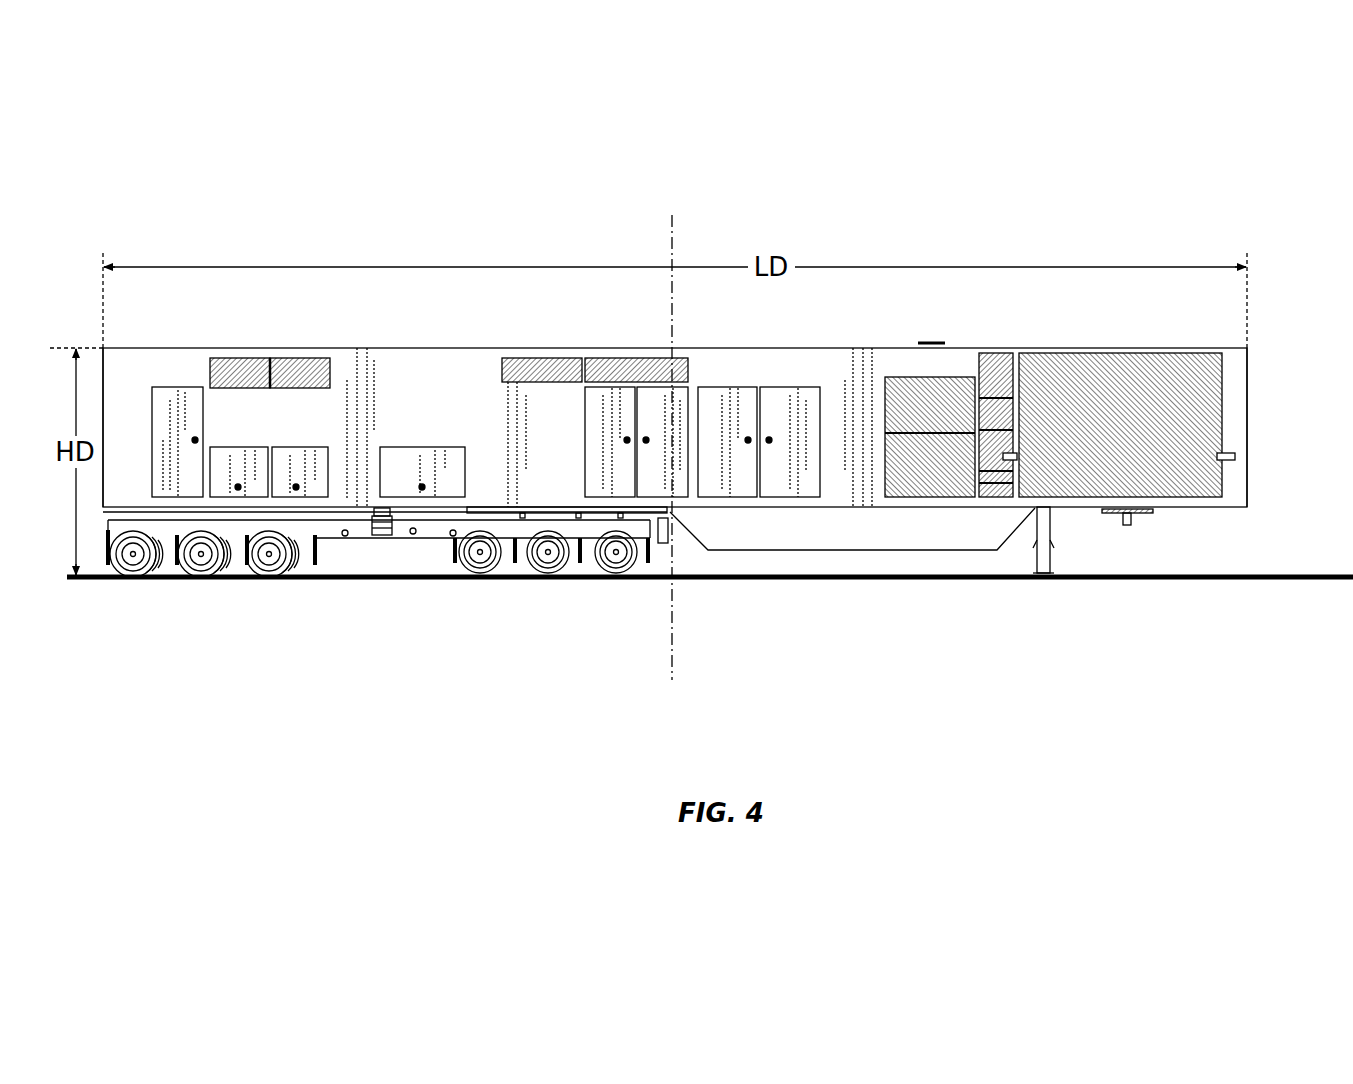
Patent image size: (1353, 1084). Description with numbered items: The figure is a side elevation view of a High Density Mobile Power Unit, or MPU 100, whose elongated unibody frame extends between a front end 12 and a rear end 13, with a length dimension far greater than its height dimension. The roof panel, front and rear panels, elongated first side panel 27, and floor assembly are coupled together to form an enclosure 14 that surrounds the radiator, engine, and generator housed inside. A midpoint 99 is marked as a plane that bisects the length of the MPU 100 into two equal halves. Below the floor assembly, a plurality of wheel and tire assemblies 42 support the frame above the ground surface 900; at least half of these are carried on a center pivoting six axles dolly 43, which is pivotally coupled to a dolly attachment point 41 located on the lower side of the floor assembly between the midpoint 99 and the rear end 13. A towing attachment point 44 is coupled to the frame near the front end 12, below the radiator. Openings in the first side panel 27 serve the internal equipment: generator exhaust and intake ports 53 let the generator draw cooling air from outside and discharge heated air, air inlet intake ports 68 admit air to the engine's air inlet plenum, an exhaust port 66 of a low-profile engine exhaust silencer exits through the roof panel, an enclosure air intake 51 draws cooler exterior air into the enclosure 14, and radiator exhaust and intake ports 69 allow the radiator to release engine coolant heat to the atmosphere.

The MPU 100 is at (1181, 241).
The front end 12 is at (1264, 397).
The rear end 13 is at (94, 341).
The enclosure 14 is at (1249, 348).
The first side panel 27 is at (452, 418).
The dolly attachment point 41 is at (387, 512).
The wheel and tire assemblies 42 is at (232, 582).
The center pivoting six axles dolly 43 is at (370, 527).
The towing attachment point 44 is at (1130, 525).
The enclosure air intake 51 is at (938, 413).
The generator exhaust and intake ports 53 is at (278, 368).
The exhaust port 66 is at (930, 343).
The air inlet intake port 68 is at (565, 368).
The radiator exhaust and intake ports 69 is at (1085, 400).
The midpoint 99 is at (674, 637).
The ground surface 900 is at (1257, 570).